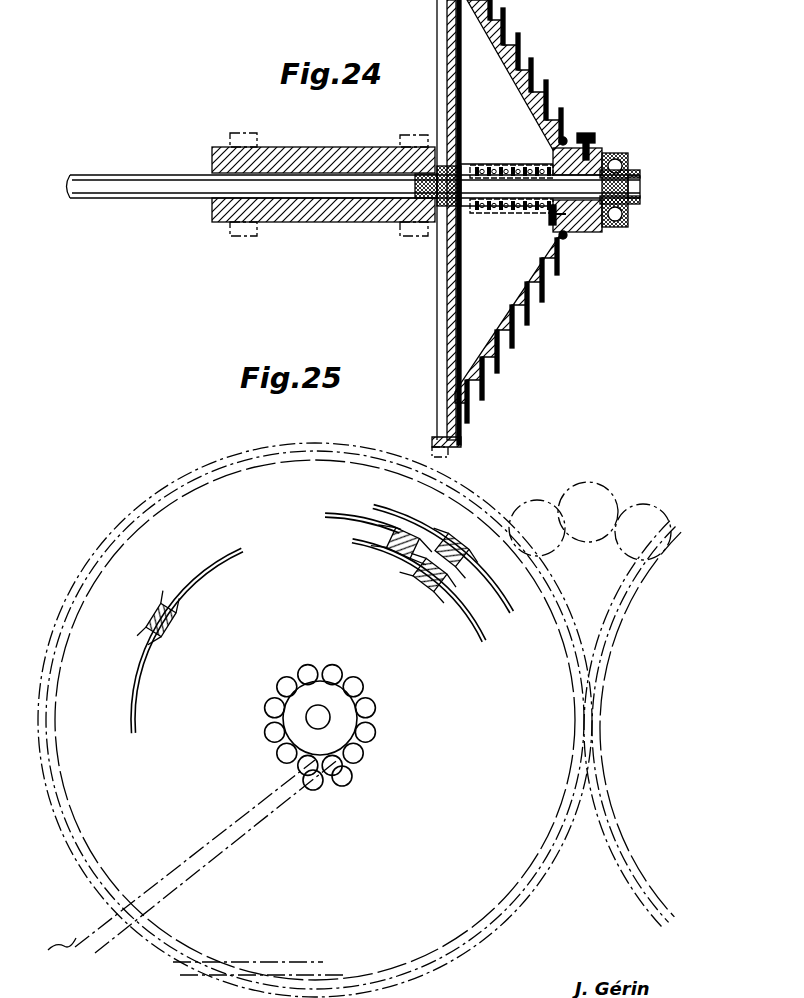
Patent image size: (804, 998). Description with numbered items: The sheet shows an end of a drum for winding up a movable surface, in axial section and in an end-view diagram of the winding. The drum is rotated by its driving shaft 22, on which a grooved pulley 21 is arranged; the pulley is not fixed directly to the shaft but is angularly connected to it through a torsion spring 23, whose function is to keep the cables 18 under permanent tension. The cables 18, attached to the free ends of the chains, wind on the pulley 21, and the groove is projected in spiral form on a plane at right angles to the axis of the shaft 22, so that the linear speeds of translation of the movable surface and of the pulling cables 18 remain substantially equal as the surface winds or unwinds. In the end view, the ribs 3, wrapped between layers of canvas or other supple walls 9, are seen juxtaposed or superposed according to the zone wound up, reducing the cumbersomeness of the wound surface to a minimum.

In FIG. 24, the driving shaft 22 is at (136, 182).
In FIG. 24, the grooved pulley 21 is at (535, 78).
In FIG. 24, the torsion spring 23 is at (500, 212).
In FIG. 24, the cables 18 is at (567, 238).
In FIG. 25, the supple walls 9 is at (207, 573).
In FIG. 25, the ribs 3 is at (417, 583).